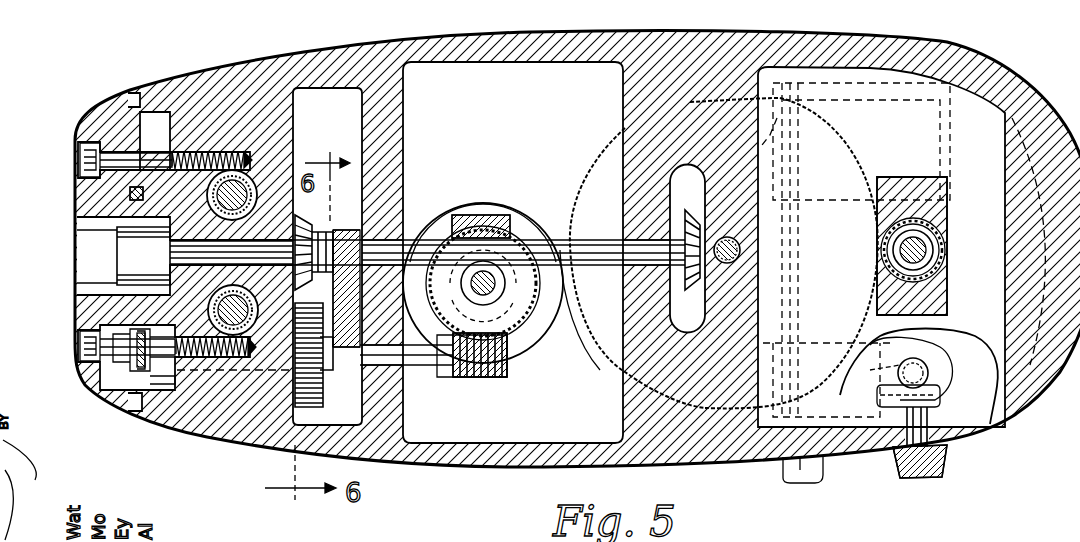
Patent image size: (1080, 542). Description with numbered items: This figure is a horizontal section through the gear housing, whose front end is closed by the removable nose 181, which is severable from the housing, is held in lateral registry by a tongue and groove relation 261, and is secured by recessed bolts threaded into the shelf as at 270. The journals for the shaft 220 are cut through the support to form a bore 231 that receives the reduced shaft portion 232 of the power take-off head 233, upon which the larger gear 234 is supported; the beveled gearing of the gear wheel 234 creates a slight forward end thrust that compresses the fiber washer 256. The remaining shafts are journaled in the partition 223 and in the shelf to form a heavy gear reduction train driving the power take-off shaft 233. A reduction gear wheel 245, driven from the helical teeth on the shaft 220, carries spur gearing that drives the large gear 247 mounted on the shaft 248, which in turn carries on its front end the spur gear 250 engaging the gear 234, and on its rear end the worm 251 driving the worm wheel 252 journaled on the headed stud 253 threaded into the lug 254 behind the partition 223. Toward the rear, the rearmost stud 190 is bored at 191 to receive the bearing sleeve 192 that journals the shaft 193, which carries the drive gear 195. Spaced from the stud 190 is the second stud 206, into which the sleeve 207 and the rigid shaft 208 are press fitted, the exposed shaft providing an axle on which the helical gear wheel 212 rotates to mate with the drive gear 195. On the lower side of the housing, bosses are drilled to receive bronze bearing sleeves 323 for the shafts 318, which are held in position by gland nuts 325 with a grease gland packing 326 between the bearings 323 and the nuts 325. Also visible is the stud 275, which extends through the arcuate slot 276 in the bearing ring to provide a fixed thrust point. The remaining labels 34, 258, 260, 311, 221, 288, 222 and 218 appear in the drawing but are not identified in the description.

The housing body 34 is at (967, 30).
The nose 181 is at (82, 125).
The screws 258 is at (78, 348).
The tongue and groove relation 261 is at (135, 95).
The pinion 260 is at (205, 150).
The bronze bearing sleeves 323 is at (252, 150).
The shaft 318 is at (258, 160).
The spring shank 311 is at (262, 168).
The power take-off head 233 is at (118, 236).
The bore 231 is at (170, 250).
The reduced shaft portion 232 is at (170, 262).
The larger gear 234 is at (75, 280).
The fiber washer 256 is at (145, 291).
The spur gear 250 is at (113, 358).
The gland nuts 325 is at (314, 259).
The grease gland packing 326 is at (370, 233).
The large gear 247 is at (300, 397).
The main shaft 221 is at (348, 250).
The slot 288 is at (340, 137).
The partition 223 is at (393, 135).
The lug 254 is at (483, 227).
The worm wheel 252 is at (560, 298).
The headed stud 253 is at (495, 283).
The threaded bolt seat in shelf 270 is at (540, 355).
The reduction gear wheel 245 is at (395, 355).
The shaft 248 is at (473, 378).
The worm 251 is at (500, 378).
The shaft 220 is at (548, 262).
The gear rim 222 is at (580, 200).
The gear 218 is at (607, 238).
The helical gear wheel 212 is at (853, 158).
The sleeve 207 is at (737, 260).
The second stud 206 is at (732, 287).
The rigid shaft 208 is at (742, 250).
The drive gear 195 is at (935, 274).
The rearmost stud 190 is at (943, 195).
The bore 191 is at (927, 238).
The bearing sleeve 192 is at (930, 250).
The shaft 193 is at (890, 250).
The arcuate slot 276 is at (963, 332).
The stud 275 is at (917, 360).